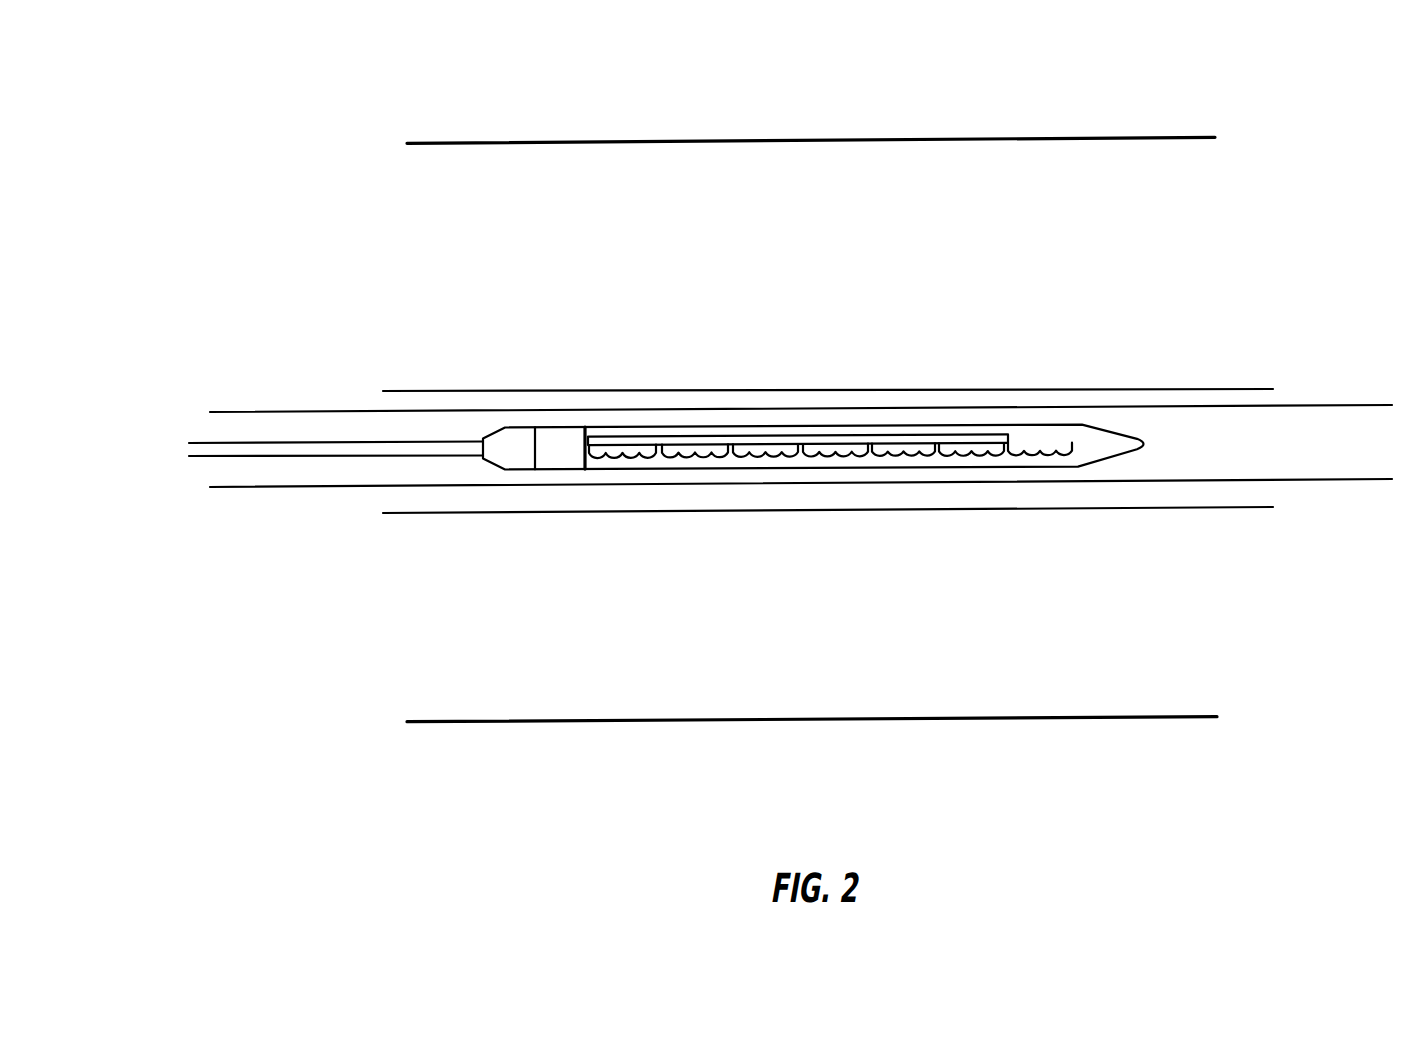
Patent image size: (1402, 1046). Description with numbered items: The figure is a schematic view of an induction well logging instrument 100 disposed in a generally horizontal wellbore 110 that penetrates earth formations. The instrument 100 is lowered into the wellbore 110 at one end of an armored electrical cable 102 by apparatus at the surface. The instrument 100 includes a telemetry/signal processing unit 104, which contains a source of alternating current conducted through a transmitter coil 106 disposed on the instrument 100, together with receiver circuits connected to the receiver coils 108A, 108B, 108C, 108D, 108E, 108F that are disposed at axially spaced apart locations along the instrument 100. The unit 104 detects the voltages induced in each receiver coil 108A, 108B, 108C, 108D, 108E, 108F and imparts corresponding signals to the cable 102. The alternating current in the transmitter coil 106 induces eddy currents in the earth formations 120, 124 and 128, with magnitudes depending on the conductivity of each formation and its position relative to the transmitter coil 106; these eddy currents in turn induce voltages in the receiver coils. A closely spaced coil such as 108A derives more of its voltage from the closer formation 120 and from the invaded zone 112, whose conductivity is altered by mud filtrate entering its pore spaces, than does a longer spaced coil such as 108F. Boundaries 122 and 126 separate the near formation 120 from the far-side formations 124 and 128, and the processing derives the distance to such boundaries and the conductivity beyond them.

The induction well logging instrument 100 is at (776, 508).
The armored electrical cable 102 is at (336, 493).
The telemetry/signal processing unit 104 is at (497, 509).
The transmitter coil 106 is at (789, 493).
The receiver coil 108A is at (648, 517).
The receiver coil 108B is at (742, 498).
The receiver coil 108C is at (787, 517).
The receiver coil 108D is at (879, 497).
The receiver coil 108E is at (925, 516).
The receiver coil 108F is at (1019, 497).
The wellbore 110 is at (801, 421).
The invaded zone 112 is at (828, 424).
The earth formation 120 is at (1257, 260).
The boundary 122 is at (844, 163).
The earth formation 124 is at (1095, 72).
The boundary 126 is at (841, 694).
The earth formation 128 is at (1102, 773).